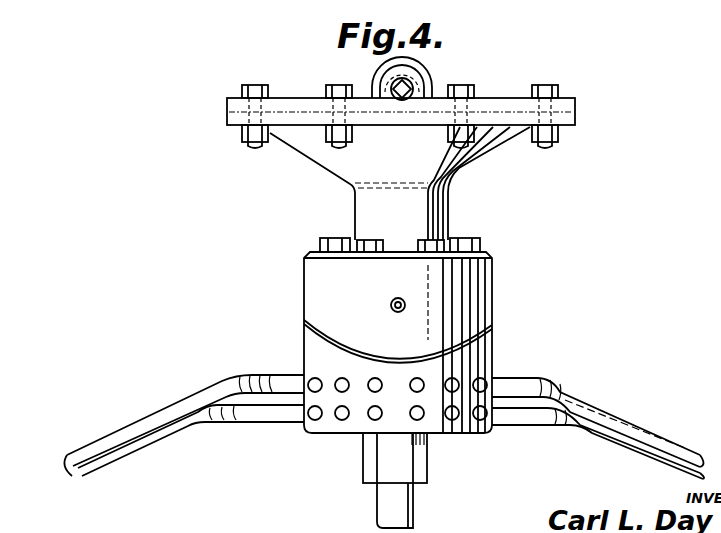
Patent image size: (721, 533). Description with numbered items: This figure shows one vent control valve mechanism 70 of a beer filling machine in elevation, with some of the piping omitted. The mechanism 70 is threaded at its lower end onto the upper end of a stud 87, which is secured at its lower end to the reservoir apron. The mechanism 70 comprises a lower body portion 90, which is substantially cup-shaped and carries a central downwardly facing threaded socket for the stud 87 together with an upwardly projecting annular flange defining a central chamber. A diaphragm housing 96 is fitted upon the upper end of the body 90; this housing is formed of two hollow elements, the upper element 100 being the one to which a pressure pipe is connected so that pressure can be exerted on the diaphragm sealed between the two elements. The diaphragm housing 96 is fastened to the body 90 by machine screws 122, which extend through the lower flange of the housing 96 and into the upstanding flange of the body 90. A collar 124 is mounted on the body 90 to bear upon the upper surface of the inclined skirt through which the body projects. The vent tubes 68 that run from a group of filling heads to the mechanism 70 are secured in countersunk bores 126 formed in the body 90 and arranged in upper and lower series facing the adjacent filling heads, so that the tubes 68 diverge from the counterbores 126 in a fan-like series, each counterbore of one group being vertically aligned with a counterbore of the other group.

The vent control valve mechanism 70 is at (502, 98).
The upper element of diaphragm housing 100 is at (430, 69).
The diaphragm housing 96 is at (449, 201).
The machine screws 122 is at (470, 252).
The lower body portion 90 is at (491, 355).
The collar 124 is at (470, 294).
The countersunk bores 126 is at (338, 382).
The pipe 68 is at (166, 418).
The stud 87 is at (414, 511).